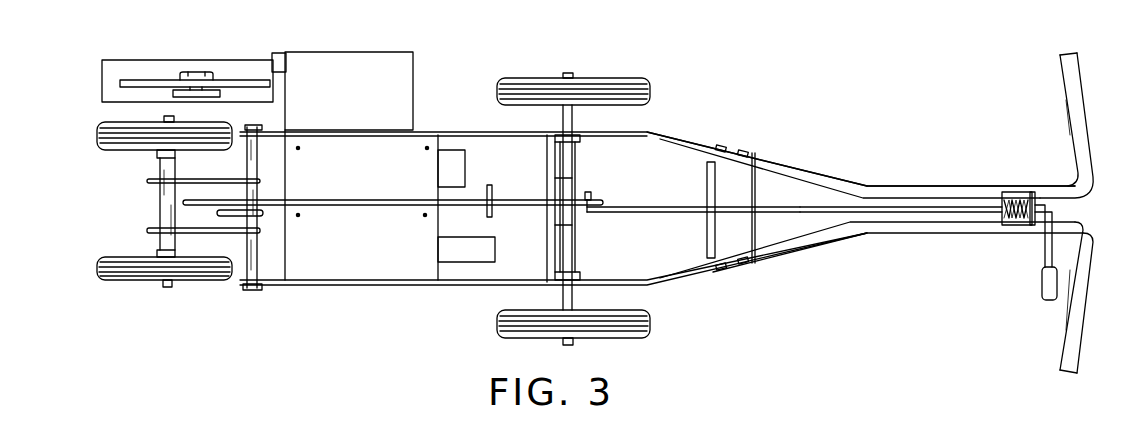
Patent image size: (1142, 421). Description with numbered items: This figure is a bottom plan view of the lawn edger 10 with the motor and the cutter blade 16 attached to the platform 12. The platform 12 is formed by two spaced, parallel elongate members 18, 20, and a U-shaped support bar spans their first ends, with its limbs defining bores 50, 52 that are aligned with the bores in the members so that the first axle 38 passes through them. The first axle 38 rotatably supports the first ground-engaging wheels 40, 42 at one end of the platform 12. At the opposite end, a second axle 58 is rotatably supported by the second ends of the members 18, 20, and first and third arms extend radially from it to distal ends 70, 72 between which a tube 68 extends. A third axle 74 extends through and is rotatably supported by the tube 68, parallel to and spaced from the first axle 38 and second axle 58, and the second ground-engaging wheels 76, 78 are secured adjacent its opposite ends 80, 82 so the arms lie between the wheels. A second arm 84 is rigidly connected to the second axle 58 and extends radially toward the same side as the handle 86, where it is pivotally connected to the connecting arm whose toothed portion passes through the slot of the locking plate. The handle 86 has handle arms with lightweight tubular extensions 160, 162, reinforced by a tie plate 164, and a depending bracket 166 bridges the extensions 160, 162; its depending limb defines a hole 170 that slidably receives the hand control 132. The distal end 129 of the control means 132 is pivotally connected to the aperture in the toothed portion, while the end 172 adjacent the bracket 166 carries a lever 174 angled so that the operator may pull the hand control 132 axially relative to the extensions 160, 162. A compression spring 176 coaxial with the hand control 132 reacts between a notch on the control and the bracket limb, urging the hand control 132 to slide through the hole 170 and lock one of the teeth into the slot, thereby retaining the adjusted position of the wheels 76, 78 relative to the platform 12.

The lawn edger 10 is at (444, 112).
The platform 12 is at (352, 153).
The cutter blade 16 is at (160, 42).
The elongate member 18 is at (430, 286).
The second member 20 is at (336, 97).
The first axle 38 is at (577, 180).
The first ground-engaging wheel 40 is at (650, 327).
The first ground-engaging wheel 42 is at (650, 90).
The bore 50 is at (573, 273).
The bore 52 is at (568, 140).
The second axle 58 is at (260, 268).
The tube 68 is at (160, 203).
The distal end 70 is at (147, 230).
The distal end 72 is at (147, 181).
The third axle 74 is at (177, 238).
The wheel 76 is at (123, 282).
The wheel 78 is at (97, 137).
The end of third axle 80 is at (167, 288).
The end of third axle 82 is at (164, 119).
The second arm 84 is at (262, 213).
The handle 86 is at (960, 178).
The distal end of control means 129 is at (610, 213).
The control means 132 is at (900, 212).
The extension 160 is at (842, 240).
The extension 162 is at (833, 173).
The tie plate 164 is at (738, 178).
The depending bracket 166 is at (1025, 224).
The hole 170 is at (1040, 190).
The end of hand control 172 is at (1053, 213).
The lever 174 is at (1092, 260).
The compression spring 176 is at (1000, 216).